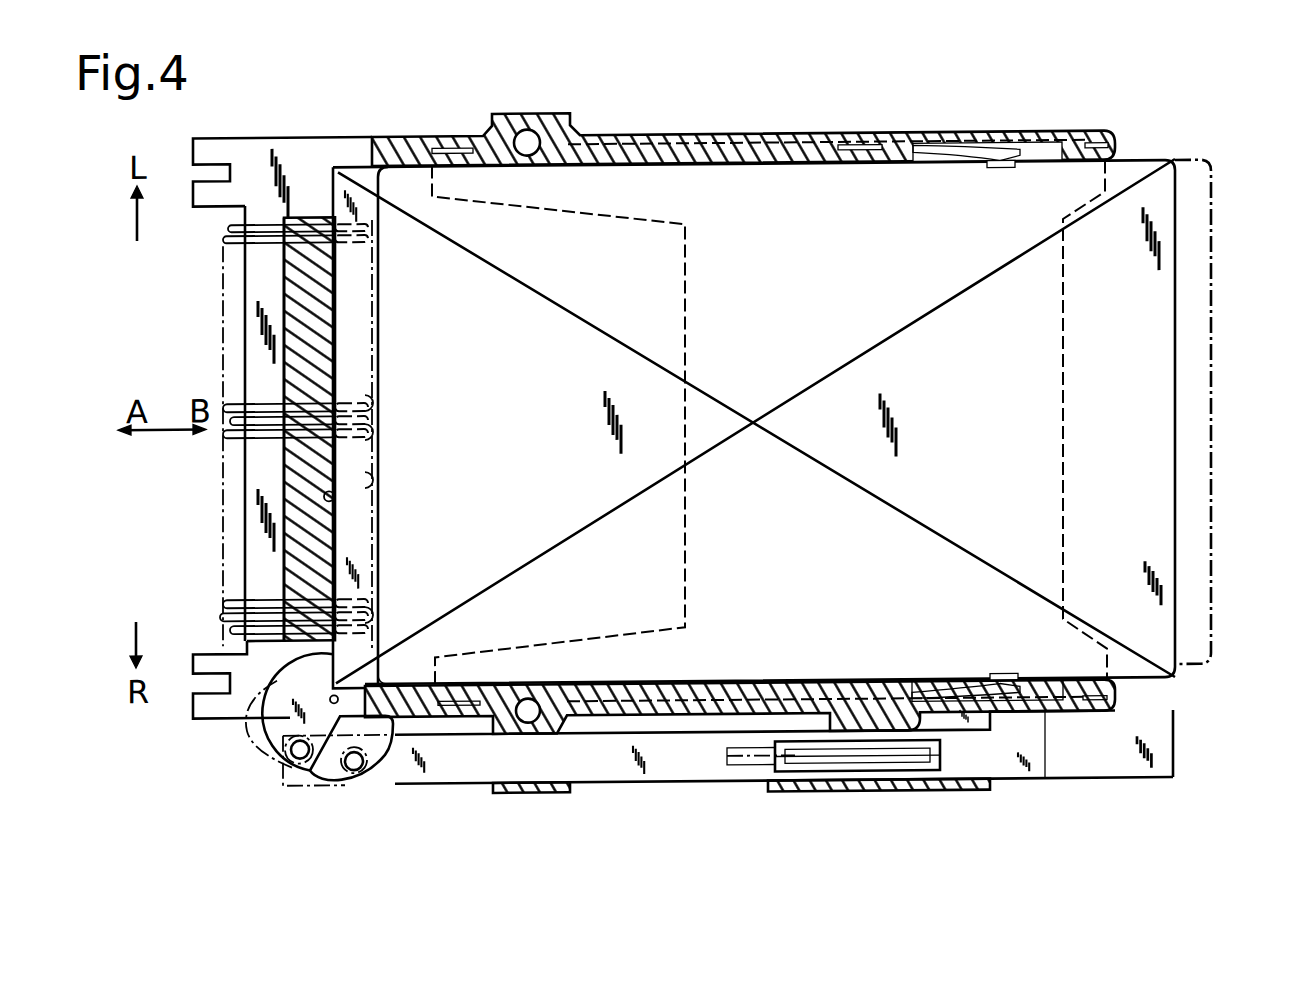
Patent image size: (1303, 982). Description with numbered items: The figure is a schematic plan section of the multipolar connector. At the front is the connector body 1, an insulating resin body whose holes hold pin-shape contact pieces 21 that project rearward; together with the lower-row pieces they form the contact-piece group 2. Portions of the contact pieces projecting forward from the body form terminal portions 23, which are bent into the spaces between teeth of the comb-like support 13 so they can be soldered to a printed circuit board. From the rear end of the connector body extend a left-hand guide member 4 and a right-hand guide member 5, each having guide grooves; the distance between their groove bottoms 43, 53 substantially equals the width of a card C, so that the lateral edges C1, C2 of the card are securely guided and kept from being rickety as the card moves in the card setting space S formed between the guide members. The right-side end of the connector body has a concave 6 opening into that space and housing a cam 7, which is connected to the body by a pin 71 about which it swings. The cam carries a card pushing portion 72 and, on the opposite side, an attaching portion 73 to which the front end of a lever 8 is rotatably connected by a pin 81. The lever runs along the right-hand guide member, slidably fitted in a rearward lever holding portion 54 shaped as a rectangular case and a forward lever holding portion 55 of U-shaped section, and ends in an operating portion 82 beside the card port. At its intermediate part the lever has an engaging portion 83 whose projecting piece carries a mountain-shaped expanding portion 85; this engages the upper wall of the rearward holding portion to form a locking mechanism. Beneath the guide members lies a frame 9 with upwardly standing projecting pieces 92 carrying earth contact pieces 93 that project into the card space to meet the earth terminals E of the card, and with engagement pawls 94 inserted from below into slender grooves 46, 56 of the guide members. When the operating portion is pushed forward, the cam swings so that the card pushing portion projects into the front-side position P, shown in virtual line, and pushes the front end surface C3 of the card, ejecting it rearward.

The connector body 1 is at (312, 133).
The contact-piece group 2 is at (378, 330).
The guide member 4 is at (738, 136).
The guide member 5 is at (692, 719).
The concave 6 is at (380, 672).
The cam 7 is at (265, 718).
The lever 8 is at (478, 788).
The frame 9 is at (1063, 316).
The comb-like support 13 is at (245, 302).
The pin-shape contact pieces 21 is at (372, 400).
The terminal portions 23 is at (223, 340).
The groove bottom 43 is at (752, 167).
The slender groove 46 is at (500, 168).
The groove bottom 53 is at (736, 687).
The rearward lever holding portion 54 is at (885, 797).
The forward lever holding portion 55 is at (540, 796).
The slender groove 56 is at (500, 687).
The pin 71 is at (337, 648).
The card pushing portion 72 is at (340, 665).
The attaching portion 73 is at (365, 777).
The pin 81 is at (297, 773).
The operating portion 82 is at (1060, 786).
The engaging portion 83 is at (800, 777).
The expanding portion 85 is at (740, 770).
The projecting pieces 92 is at (918, 165).
The earth contact pieces 93 is at (985, 164).
The engagement pawls 94 is at (450, 149).
The card C is at (1175, 413).
The lateral edge C1 is at (645, 137).
The lateral edge C2 is at (613, 719).
The front end surface C3 is at (335, 495).
The earth terminals E is at (1003, 173).
The front-side position P is at (330, 697).
The card setting space S is at (755, 421).